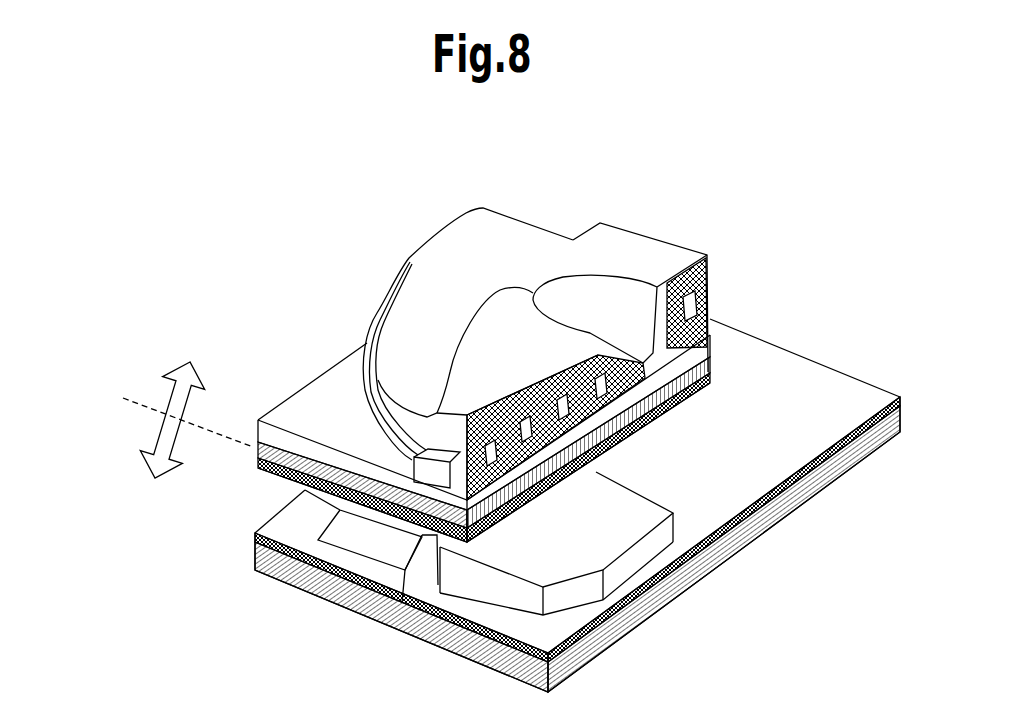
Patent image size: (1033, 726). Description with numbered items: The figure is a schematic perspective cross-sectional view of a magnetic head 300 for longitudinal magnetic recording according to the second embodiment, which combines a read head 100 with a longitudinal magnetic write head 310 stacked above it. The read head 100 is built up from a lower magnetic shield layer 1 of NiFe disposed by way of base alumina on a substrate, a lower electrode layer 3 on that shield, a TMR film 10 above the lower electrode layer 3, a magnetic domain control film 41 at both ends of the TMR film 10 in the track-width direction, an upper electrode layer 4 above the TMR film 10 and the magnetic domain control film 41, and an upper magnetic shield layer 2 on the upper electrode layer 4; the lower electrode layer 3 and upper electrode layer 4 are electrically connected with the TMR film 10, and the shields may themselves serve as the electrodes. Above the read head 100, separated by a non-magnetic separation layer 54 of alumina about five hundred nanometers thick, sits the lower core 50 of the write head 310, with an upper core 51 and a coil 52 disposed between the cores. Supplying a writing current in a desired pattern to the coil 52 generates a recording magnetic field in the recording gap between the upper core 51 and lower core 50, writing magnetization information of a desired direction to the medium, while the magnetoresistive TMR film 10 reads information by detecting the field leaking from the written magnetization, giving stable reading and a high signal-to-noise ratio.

The lower magnetic shield layer 1 is at (600, 640).
The upper magnetic shield layer 2 is at (278, 578).
The lower electrode layer 3 is at (492, 645).
The upper electrode layer 4 is at (263, 483).
The TMR film 10 is at (415, 577).
The magnetic domain control film 41 is at (473, 580).
The lower core 50 is at (284, 445).
The upper core 51 is at (414, 450).
The coil 52 is at (575, 405).
The non-magnetic separation layer 54 is at (256, 450).
The read head 100 is at (378, 452).
The magnetic head 300 is at (272, 206).
The longitudinal magnetic write head 310 is at (402, 354).